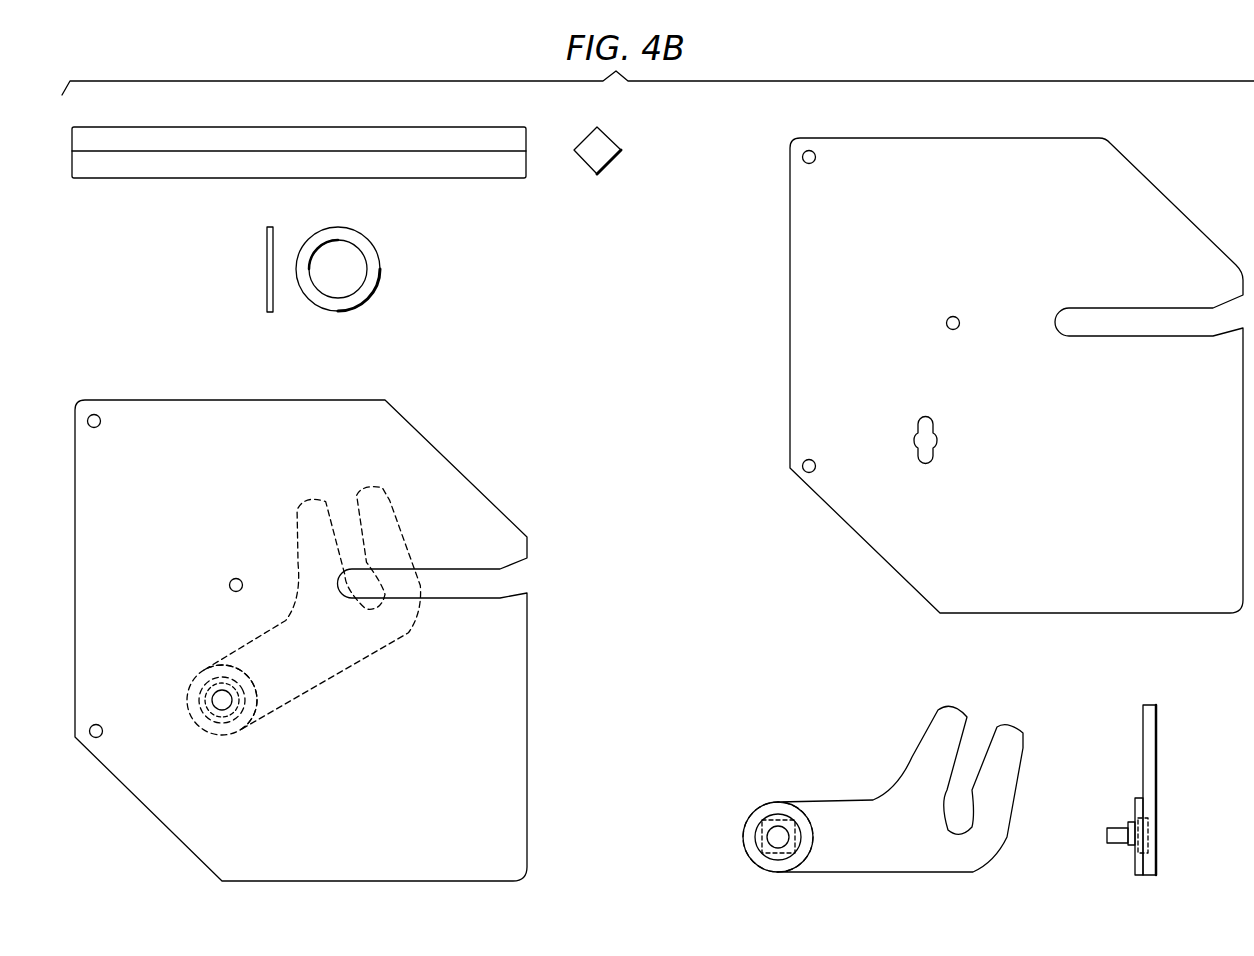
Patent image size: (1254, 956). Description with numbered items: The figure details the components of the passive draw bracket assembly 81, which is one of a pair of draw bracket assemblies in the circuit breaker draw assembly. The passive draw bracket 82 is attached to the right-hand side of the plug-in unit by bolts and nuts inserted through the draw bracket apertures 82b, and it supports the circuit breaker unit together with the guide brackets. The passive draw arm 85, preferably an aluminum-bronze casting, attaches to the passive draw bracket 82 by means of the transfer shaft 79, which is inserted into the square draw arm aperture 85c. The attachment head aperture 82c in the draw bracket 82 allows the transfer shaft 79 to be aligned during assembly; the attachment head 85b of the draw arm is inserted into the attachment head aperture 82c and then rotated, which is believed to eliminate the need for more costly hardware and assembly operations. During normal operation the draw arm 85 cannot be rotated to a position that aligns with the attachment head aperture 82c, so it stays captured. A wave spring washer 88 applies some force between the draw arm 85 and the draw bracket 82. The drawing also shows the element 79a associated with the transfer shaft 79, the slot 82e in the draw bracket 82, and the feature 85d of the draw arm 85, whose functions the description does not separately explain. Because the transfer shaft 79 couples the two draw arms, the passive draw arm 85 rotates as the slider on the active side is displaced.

The transfer shaft 79 is at (148, 192).
The square key 79a is at (606, 139).
The wave spring washer 88 is at (334, 232).
The passive draw bracket 82 is at (438, 452).
The passive draw bracket assembly 81 is at (492, 473).
The draw bracket apertures 82b is at (96, 428).
The slot 82e is at (518, 593).
The attachment head aperture 82c is at (930, 442).
The passive draw arm 85 is at (914, 756).
The lever fingers 85d is at (995, 752).
The attachment head 85b is at (757, 858).
The square draw arm aperture 85c is at (747, 826).